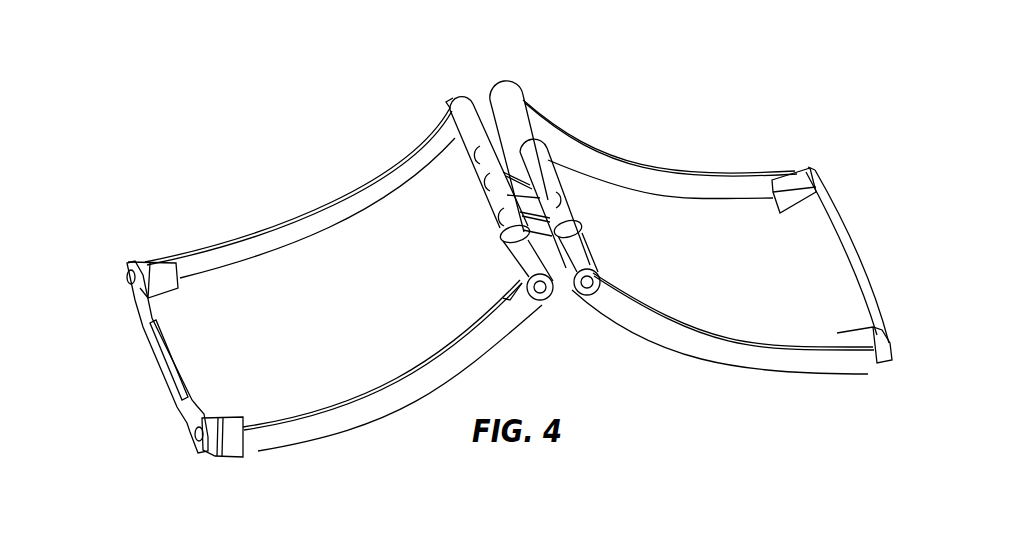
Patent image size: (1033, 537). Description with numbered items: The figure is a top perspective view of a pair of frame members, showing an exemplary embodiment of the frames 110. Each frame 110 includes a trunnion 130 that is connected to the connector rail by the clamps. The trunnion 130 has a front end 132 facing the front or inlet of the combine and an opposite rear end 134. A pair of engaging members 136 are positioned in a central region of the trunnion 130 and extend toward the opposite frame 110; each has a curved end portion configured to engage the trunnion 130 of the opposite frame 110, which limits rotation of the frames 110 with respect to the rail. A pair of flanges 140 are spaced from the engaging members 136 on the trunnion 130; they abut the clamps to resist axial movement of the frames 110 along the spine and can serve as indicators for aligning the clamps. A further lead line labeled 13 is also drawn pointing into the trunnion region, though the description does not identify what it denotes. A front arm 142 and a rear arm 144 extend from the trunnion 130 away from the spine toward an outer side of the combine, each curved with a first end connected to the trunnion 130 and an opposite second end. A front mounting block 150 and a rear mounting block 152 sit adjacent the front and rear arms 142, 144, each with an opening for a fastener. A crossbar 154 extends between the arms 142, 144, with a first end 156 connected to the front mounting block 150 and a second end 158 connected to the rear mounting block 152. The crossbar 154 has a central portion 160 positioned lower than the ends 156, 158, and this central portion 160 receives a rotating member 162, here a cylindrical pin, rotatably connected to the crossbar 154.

The frame 110 is at (287, 90).
The rear arm 144 is at (293, 222).
The front arm 142 is at (363, 408).
The rear mounting block 152 is at (152, 263).
The crossbar 154 is at (126, 337).
The second end 158 is at (138, 293).
The central portion 160 is at (163, 380).
The rotating member 162 is at (177, 367).
The first end 156 is at (192, 430).
The front mounting block 150 is at (225, 427).
The rear end 134 is at (472, 124).
The trunnion 130 is at (487, 168).
The engaging members 136 is at (535, 185).
The hinge connector 13 is at (549, 175).
The flanges 140 is at (497, 235).
The front end 132 is at (545, 295).